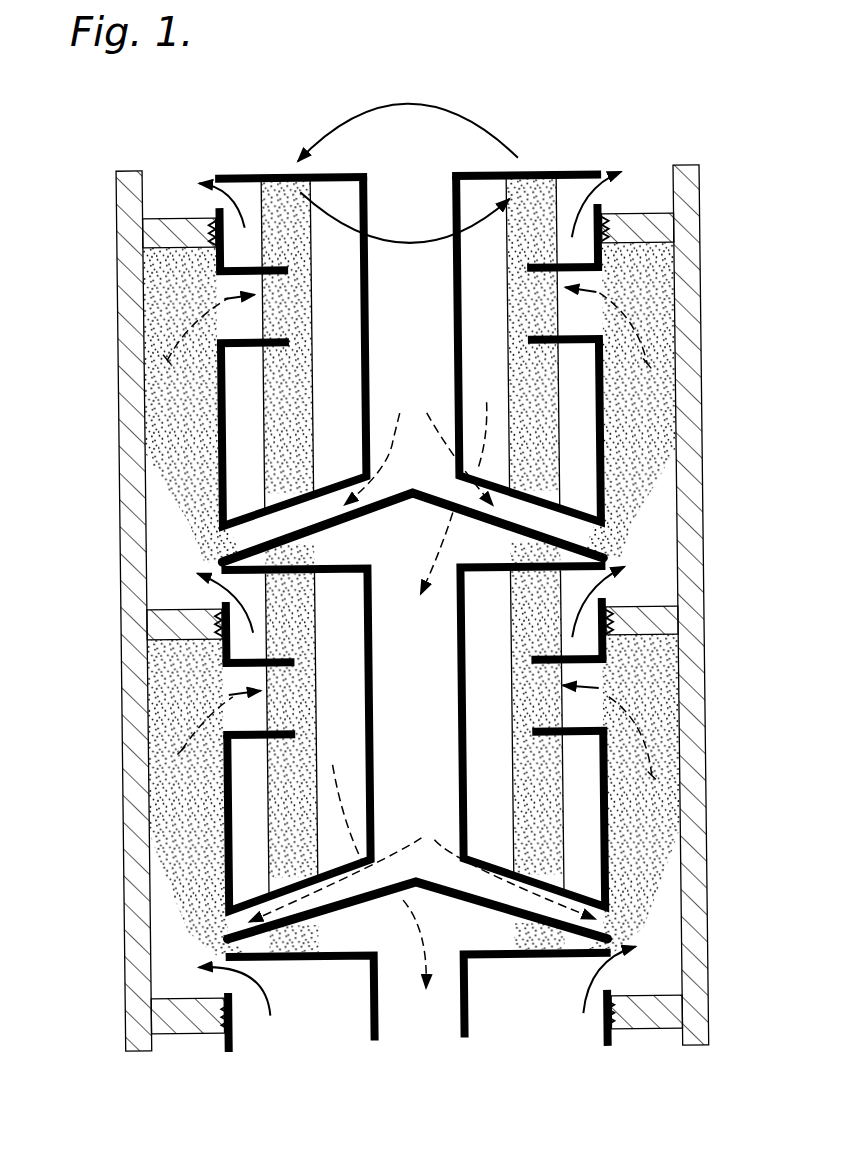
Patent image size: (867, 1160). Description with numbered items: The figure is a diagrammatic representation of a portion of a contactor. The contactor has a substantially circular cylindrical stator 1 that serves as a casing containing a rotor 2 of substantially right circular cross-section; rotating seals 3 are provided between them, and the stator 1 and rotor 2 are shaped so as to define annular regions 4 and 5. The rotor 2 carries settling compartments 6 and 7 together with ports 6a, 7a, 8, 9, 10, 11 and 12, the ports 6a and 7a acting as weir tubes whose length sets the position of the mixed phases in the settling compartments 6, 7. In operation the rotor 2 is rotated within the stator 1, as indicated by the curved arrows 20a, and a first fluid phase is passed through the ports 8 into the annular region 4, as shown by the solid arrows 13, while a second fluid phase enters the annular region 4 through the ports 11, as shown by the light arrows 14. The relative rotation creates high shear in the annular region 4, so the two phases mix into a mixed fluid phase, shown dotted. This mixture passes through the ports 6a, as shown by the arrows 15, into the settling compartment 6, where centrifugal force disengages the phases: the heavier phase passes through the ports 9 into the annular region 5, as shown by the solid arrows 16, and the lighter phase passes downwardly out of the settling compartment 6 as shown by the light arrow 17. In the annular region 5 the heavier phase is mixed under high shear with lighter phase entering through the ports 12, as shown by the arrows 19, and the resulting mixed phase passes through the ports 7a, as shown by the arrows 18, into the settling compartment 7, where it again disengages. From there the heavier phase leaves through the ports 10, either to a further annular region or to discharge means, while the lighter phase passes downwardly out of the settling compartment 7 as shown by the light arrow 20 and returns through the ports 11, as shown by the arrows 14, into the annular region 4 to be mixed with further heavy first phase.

The stator 1 is at (138, 692).
The rotor 2 is at (240, 174).
The rotating seals 3 is at (216, 230).
The annular region 4 is at (168, 839).
The annular region 5 is at (652, 480).
The settling compartment 6 is at (476, 767).
The ports 6a is at (281, 672).
The settling compartment 7 is at (473, 344).
The ports 7a is at (239, 272).
The ports 8 is at (191, 992).
The ports 9 is at (219, 588).
The ports 10 is at (215, 178).
The ports 11 is at (232, 928).
The ports 12 is at (270, 540).
The solid arrows 13 is at (268, 1000).
The light arrows 14 is at (422, 842).
The arrows 15 is at (180, 752).
The solid arrows 16 is at (222, 605).
The light arrow 17 is at (423, 1008).
The arrows 18 is at (163, 350).
The arrows 19 is at (417, 444).
The light arrow 20 is at (396, 237).
The arrows indicating rotor rotation 20a is at (428, 105).